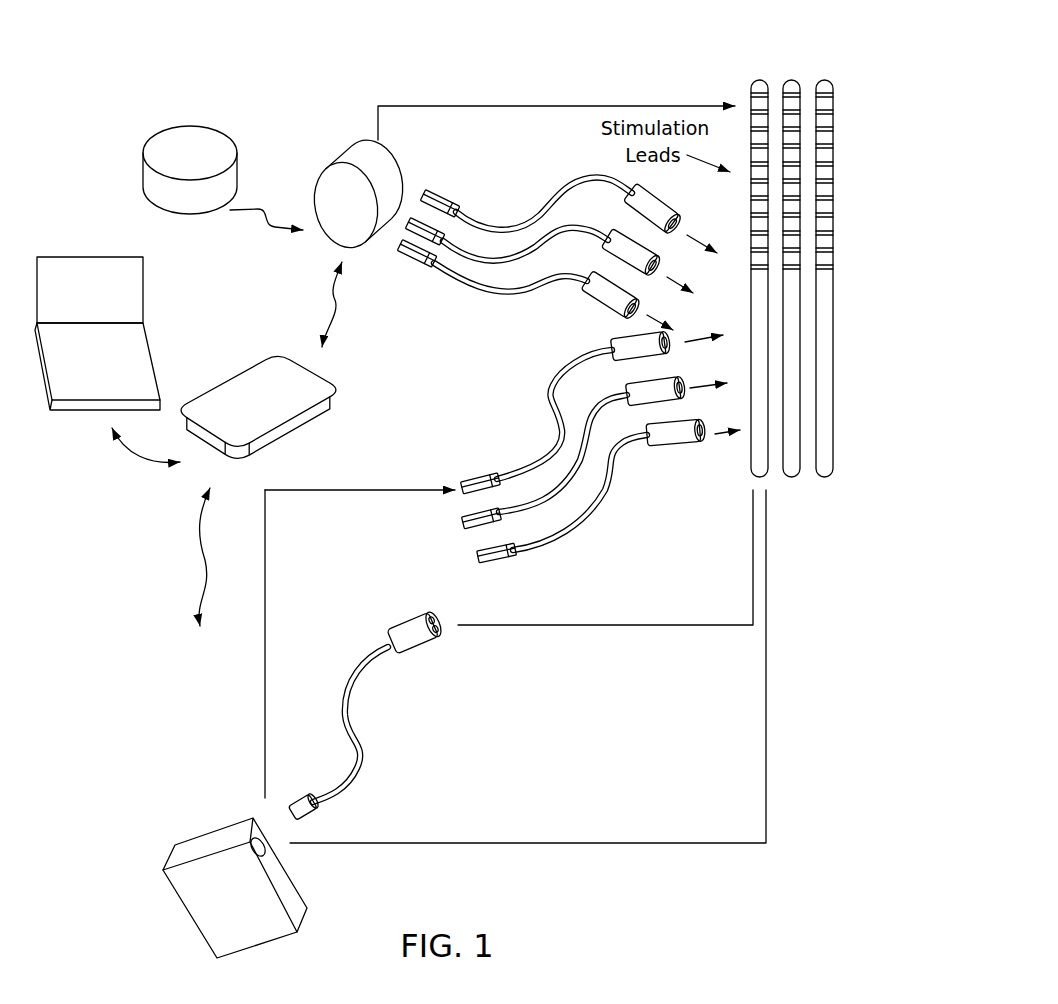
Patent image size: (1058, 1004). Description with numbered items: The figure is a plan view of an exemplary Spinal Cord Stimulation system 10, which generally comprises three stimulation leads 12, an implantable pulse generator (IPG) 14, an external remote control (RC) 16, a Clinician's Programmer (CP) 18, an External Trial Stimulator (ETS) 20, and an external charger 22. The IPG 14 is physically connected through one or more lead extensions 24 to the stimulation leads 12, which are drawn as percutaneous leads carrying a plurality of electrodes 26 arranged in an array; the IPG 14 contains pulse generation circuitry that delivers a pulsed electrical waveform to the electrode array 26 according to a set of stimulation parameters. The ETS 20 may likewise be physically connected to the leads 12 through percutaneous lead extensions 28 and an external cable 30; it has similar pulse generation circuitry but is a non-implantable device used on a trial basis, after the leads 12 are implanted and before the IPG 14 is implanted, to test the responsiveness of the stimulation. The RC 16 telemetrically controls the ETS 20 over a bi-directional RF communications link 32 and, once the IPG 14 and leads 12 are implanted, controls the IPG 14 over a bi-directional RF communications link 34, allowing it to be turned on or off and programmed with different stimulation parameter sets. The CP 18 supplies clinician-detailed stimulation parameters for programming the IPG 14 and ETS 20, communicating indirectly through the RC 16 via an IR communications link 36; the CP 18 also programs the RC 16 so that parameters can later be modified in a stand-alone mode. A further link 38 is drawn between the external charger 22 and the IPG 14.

The SCS system 10 is at (525, 60).
The stimulation leads 12 is at (825, 84).
The implantable pulse generator (IPG) 14 is at (346, 162).
The remote control (RC) 16 is at (270, 372).
The Clinician's Programmer (CP) 18 is at (77, 270).
The External Trial Stimulator (ETS) 20 is at (208, 843).
The external charger 22 is at (190, 133).
The lead extensions 24 is at (573, 276).
The electrodes 26 is at (756, 117).
The percutaneous lead extensions 28 is at (550, 492).
The external cable 30 is at (365, 660).
The bi-directional RF communications link 32 is at (202, 594).
The bi-directional RF communications link 34 is at (342, 316).
The IR communications link 36 is at (137, 455).
The charger-IPG inductive link 38 is at (245, 212).